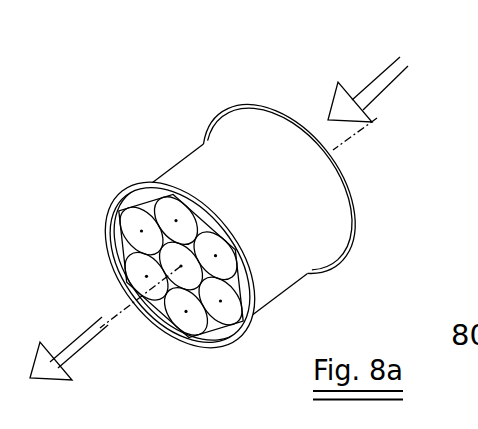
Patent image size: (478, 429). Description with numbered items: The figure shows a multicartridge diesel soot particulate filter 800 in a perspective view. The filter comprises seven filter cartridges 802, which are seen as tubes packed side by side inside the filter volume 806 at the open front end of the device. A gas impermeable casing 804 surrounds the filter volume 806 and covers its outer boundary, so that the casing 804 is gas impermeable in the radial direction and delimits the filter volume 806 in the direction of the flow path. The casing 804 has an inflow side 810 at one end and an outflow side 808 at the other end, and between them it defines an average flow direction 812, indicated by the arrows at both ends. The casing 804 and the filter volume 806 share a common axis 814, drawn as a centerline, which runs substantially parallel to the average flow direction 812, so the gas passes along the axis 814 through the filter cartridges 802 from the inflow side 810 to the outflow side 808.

The multicartridge diesel soot particulate filter 800 is at (123, 75).
The filter cartridges 802 is at (218, 269).
The gas impermeable casing 804 is at (235, 210).
The filter volume 806 is at (143, 201).
The outflow side 808 is at (104, 280).
The inflow side 810 is at (297, 97).
The average flow direction 812 is at (246, 230).
The axis 814 is at (255, 223).